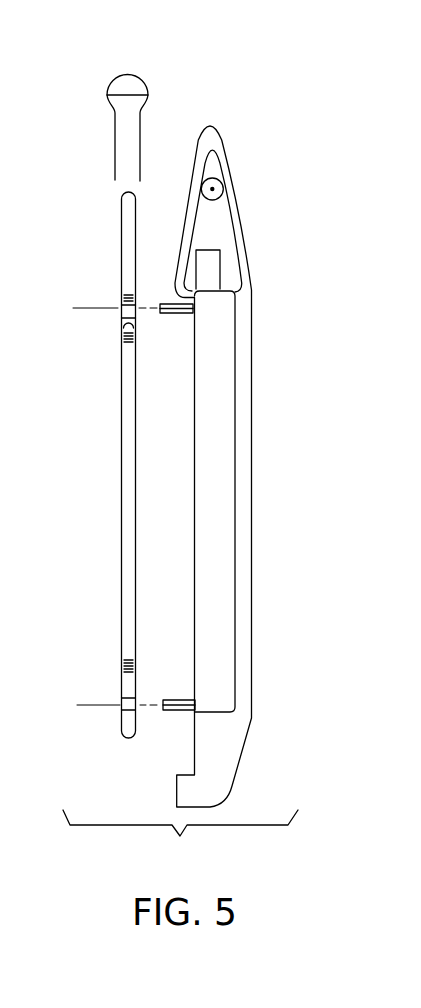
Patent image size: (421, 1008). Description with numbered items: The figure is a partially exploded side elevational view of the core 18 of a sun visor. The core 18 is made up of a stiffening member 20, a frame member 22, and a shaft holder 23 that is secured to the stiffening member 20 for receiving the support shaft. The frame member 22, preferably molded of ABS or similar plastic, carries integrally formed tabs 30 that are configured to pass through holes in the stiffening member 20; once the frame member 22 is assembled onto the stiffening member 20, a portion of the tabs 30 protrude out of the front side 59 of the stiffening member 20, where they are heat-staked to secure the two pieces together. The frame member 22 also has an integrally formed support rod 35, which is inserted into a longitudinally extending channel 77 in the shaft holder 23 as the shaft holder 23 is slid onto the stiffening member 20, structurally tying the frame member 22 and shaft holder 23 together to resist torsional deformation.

The core 18 is at (180, 840).
The stiffening member 20 is at (120, 528).
The frame member 22 is at (252, 480).
The shaft holder 23 is at (143, 80).
The tabs 30 is at (169, 315).
The support rod 35 is at (224, 189).
The front side 59 is at (122, 417).
The longitudinally extending channel 77 is at (125, 96).